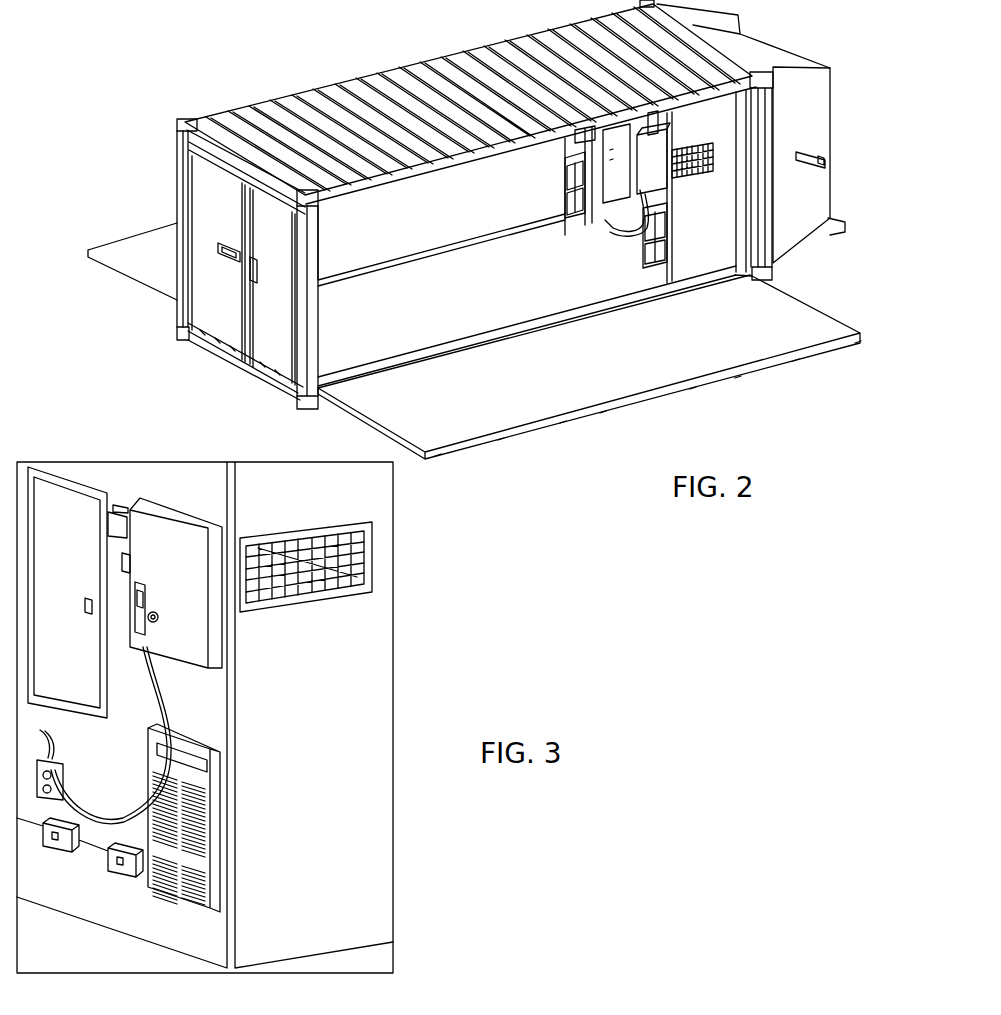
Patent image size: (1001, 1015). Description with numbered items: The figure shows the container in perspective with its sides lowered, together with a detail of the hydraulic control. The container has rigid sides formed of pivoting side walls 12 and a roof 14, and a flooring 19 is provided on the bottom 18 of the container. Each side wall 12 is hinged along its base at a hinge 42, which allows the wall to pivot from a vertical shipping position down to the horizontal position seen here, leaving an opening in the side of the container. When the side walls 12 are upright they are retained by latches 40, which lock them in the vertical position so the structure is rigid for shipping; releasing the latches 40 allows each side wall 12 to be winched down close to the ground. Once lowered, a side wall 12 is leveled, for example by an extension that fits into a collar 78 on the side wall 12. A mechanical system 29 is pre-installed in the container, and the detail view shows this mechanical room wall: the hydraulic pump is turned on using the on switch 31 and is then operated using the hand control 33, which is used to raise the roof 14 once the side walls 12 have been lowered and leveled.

In FIG. 2, the pivoting side wall 12 is at (148, 287).
In FIG. 2, the roof 14 is at (370, 86).
In FIG. 2, the bottom 18 is at (268, 397).
In FIG. 2, the flooring 19 is at (363, 350).
In FIG. 2, the mechanical system 29 is at (622, 241).
In FIG. 3, the mechanical system 29 is at (333, 787).
In FIG. 3, the on switch 31 is at (152, 598).
In FIG. 3, the hand control 33 is at (82, 765).
In FIG. 2, the latch 40 is at (500, 443).
In FIG. 2, the hinge 42 is at (436, 352).
In FIG. 2, the collar 78 is at (437, 460).